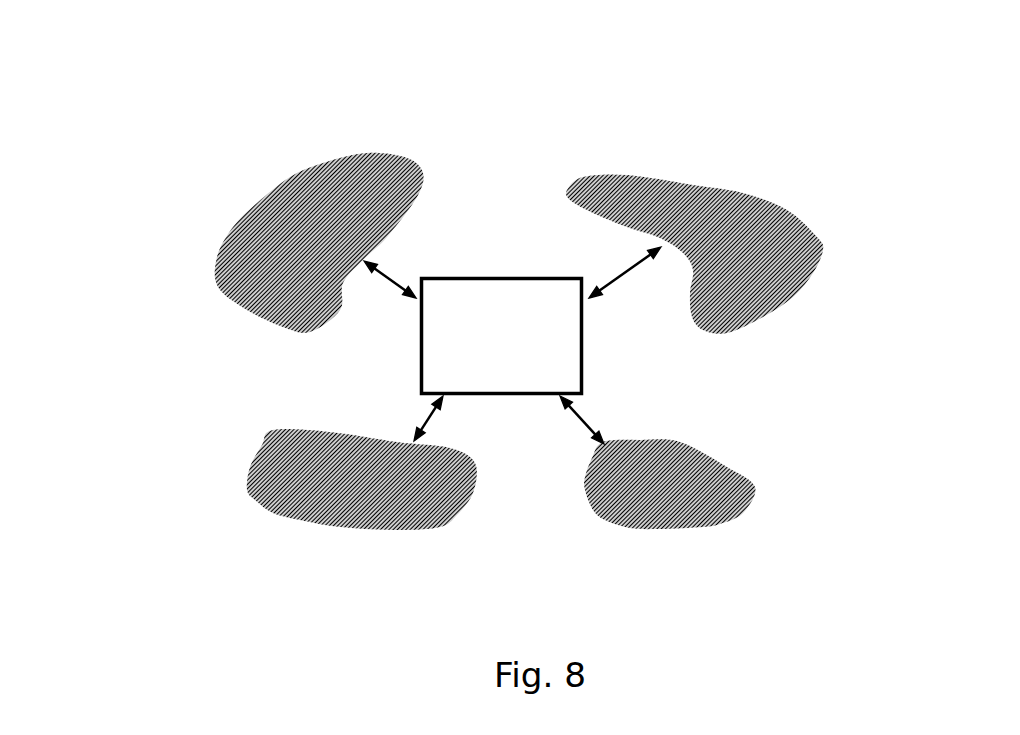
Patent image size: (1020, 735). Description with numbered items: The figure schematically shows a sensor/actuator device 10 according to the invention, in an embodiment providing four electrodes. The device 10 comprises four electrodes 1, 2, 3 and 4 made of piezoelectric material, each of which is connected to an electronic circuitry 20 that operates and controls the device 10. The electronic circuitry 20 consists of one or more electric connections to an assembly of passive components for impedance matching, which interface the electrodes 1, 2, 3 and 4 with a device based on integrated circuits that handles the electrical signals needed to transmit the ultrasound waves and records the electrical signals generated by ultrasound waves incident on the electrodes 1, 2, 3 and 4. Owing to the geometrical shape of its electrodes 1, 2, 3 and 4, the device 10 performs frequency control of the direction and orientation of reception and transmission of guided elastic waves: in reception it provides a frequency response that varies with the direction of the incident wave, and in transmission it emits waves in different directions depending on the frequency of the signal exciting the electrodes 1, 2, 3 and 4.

The electrode 1 is at (292, 168).
The electrode 2 is at (718, 182).
The electrode 3 is at (333, 530).
The electrode 4 is at (682, 530).
The device 10 is at (210, 340).
The electronic circuitry 20 is at (583, 343).